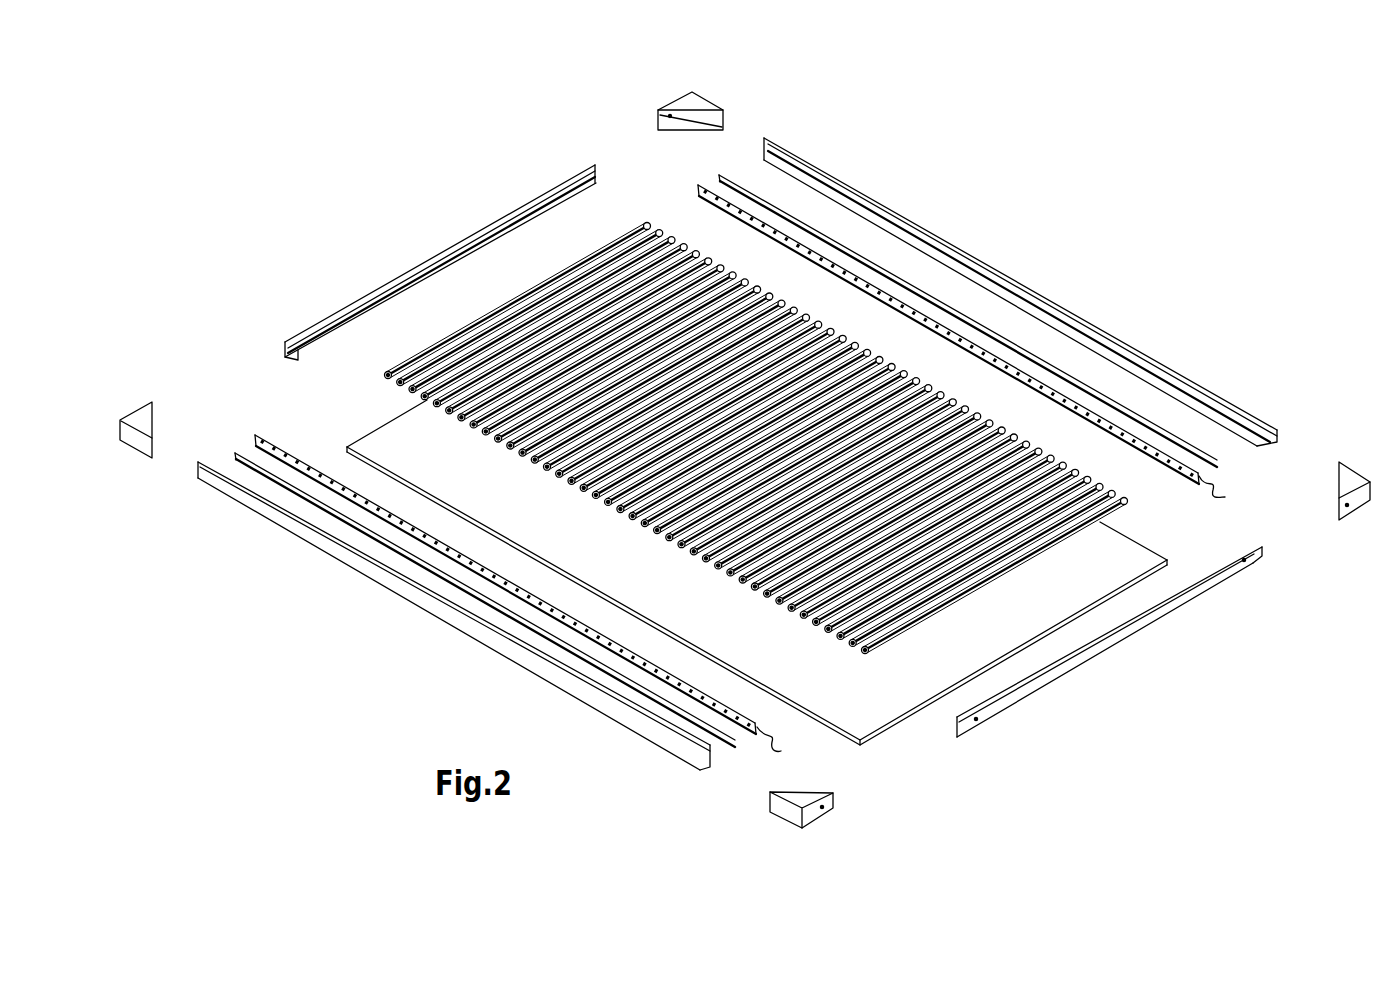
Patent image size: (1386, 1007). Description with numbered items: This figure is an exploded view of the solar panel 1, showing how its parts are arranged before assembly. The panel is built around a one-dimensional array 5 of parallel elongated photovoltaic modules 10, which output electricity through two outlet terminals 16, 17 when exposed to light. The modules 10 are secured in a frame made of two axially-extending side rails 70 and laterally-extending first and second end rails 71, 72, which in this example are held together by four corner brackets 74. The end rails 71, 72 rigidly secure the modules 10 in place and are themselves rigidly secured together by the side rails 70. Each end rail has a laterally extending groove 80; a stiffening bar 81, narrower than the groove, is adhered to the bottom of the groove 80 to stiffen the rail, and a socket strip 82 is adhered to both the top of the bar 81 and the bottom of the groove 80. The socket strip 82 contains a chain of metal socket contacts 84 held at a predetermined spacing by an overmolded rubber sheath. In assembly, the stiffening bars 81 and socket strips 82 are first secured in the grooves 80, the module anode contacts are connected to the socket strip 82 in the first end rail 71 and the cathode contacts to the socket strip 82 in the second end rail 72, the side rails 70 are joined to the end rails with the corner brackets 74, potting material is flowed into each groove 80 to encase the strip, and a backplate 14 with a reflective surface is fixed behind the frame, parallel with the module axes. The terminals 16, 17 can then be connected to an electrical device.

The solar panel 1 is at (1248, 313).
The one-dimensional array 5 is at (1058, 573).
The photovoltaic module 10 is at (610, 337).
The backplate 14 is at (880, 707).
The outlet terminal 16 is at (778, 739).
The outlet terminal 17 is at (1221, 491).
The side rail 70 is at (443, 252).
The first end rail 71 is at (381, 569).
The second end rail 72 is at (1068, 301).
The corner bracket 74 is at (683, 107).
The groove 80 is at (812, 186).
The stiffening bar 81 is at (868, 255).
The socket strip 82 is at (917, 291).
The socket contact 84 is at (708, 197).